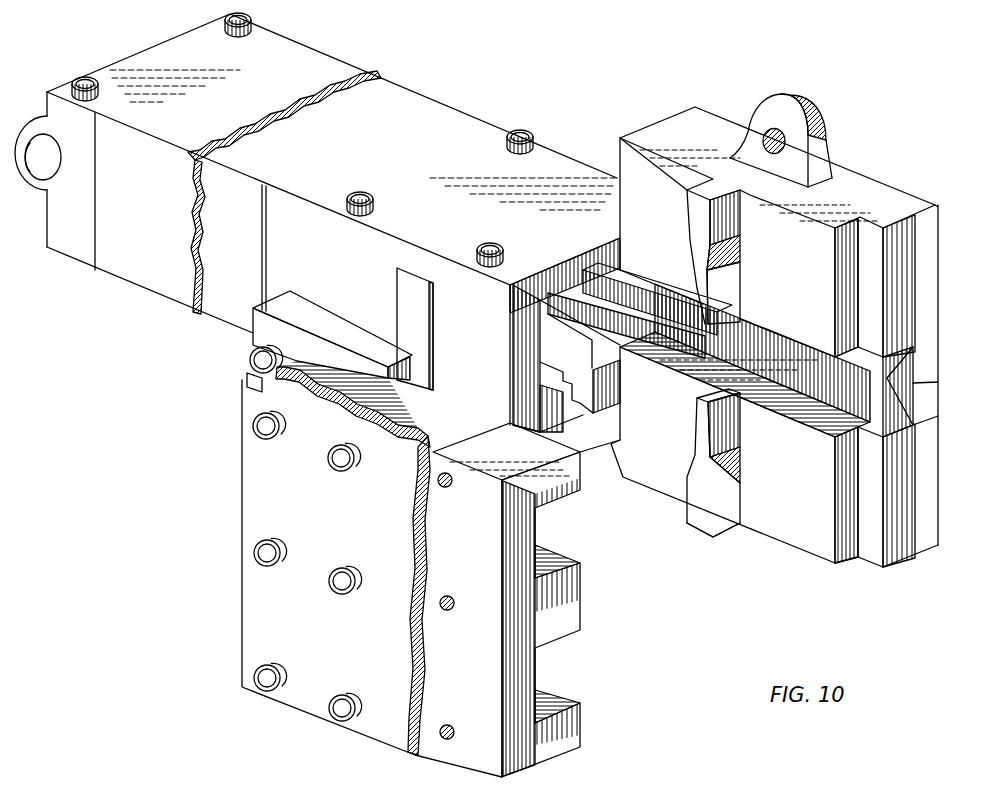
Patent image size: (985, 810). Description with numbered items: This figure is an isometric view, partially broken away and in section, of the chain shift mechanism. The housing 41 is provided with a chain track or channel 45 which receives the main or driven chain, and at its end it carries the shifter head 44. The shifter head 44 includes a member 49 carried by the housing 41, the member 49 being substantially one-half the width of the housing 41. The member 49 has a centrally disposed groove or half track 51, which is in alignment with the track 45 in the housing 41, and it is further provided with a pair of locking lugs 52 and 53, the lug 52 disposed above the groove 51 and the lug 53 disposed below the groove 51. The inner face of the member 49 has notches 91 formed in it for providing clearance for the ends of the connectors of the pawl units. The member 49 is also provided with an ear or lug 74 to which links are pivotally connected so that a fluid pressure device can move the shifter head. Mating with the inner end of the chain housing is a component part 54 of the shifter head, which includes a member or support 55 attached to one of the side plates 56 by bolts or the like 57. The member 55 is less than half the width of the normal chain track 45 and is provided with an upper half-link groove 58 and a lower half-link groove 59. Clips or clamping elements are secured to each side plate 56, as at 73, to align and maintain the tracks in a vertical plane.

The housing 41 is at (422, 104).
The shifter head 44 is at (871, 167).
The chain track 45 is at (601, 284).
The member 49 is at (927, 275).
The groove 51 is at (890, 378).
The locking lug 52 is at (726, 276).
The locking lug 53 is at (725, 518).
The component part 54 is at (531, 600).
The member 55 is at (523, 657).
The side plate 56 is at (250, 500).
The bolts 57 is at (254, 427).
The upper half-link groove 58 is at (552, 558).
The lower half-link groove 59 is at (557, 702).
The clip securing point 73 is at (249, 362).
The ear 74 is at (820, 131).
The notches 91 is at (872, 231).